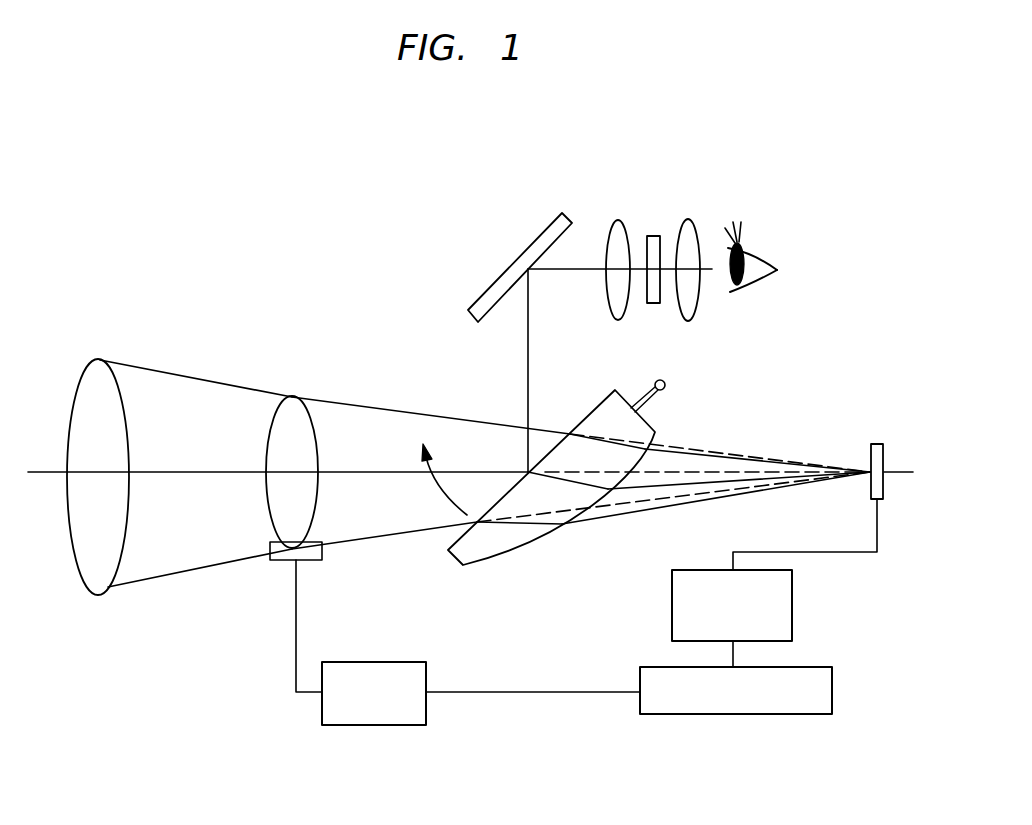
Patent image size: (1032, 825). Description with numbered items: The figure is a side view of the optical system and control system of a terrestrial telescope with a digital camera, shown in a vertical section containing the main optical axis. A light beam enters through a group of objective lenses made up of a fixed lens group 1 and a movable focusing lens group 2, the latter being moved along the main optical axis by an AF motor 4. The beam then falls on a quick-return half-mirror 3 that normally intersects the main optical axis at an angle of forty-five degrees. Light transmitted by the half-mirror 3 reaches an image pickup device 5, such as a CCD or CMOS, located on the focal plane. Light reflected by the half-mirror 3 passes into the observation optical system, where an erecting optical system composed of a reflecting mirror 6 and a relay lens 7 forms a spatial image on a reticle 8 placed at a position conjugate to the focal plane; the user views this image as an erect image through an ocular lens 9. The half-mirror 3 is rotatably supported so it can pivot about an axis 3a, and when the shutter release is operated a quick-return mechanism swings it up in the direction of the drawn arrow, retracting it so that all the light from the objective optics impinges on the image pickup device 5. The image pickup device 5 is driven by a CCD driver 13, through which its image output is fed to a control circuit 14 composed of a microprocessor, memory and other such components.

The fixed lens group 1 is at (98, 583).
The movable focusing lens group 2 is at (290, 415).
The quick-return half-mirror 3 is at (473, 552).
The axis 3a is at (666, 383).
The AF motor 4 is at (426, 716).
The image pickup device 5 is at (880, 502).
The reflecting mirror 6 is at (518, 267).
The relay lens 7 is at (617, 295).
The reticle 8 is at (660, 237).
The ocular lens 9 is at (697, 287).
The CCD driver 13 is at (792, 599).
The control circuit 14 is at (832, 683).